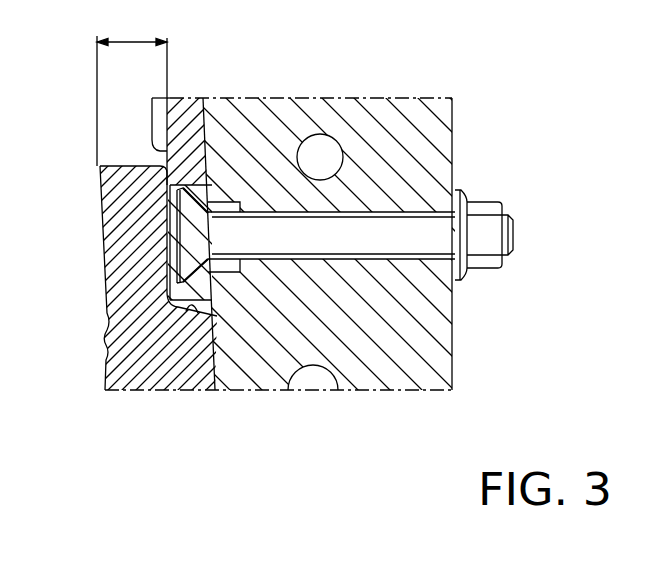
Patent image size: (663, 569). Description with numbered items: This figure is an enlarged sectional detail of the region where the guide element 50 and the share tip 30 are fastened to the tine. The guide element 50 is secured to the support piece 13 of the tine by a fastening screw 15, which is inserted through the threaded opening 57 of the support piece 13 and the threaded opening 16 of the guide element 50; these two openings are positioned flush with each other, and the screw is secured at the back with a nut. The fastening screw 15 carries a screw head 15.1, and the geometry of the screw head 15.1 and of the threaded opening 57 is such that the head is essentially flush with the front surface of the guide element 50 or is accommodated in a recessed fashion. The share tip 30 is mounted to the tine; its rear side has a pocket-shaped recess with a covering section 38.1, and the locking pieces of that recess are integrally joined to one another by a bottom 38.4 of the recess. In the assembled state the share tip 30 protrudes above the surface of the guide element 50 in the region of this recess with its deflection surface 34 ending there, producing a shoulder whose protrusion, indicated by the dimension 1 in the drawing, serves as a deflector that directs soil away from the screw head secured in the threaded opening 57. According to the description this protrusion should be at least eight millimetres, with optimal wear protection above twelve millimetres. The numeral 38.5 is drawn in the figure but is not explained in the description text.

The thickness dimension 1 is at (132, 92).
The support piece 13 is at (378, 108).
The fastening screw 15 is at (482, 208).
The screw head 15.1 is at (190, 218).
The threaded opening 16 is at (387, 262).
The share tip 30 is at (90, 346).
The deflection surface 34 is at (99, 284).
The covering section 38.1 is at (118, 243).
The bottom 38.4 is at (200, 313).
The insert flange 38.5 is at (100, 165).
The guide element 50 is at (190, 107).
The threaded opening 57 is at (208, 202).